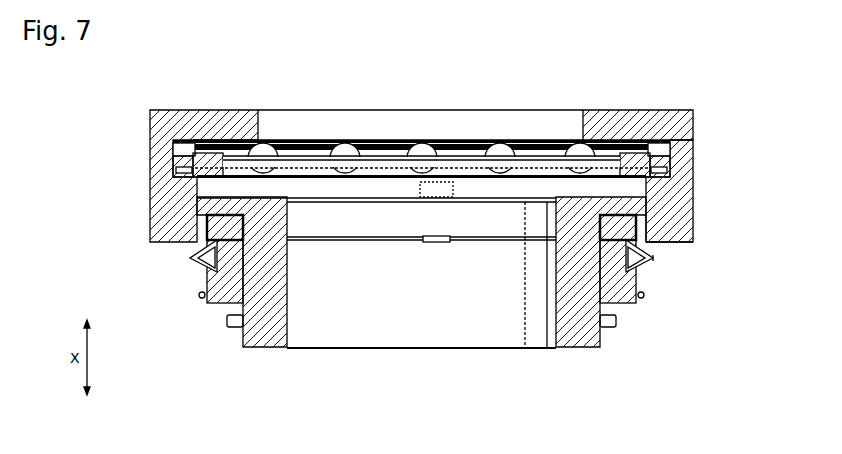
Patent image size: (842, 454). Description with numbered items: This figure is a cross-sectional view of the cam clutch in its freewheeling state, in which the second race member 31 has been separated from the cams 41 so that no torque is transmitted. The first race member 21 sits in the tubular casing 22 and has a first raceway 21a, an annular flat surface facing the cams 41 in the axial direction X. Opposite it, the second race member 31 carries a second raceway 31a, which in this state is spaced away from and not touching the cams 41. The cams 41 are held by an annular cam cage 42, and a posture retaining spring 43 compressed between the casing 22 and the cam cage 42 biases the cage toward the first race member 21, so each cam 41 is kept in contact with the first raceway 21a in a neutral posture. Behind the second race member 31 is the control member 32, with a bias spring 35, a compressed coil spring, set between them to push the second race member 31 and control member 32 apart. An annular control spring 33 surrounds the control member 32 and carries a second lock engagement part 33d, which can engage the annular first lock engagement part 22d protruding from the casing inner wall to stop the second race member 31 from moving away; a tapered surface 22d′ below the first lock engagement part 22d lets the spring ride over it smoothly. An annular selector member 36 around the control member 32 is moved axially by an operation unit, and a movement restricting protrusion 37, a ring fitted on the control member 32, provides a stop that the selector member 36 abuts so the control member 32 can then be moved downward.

The first race member 21 is at (193, 127).
The first raceway 21a is at (217, 140).
The casing 22 is at (690, 197).
The first lock engagement part 22d is at (693, 238).
The tapered surface 22d′ is at (653, 243).
The second race member 31 is at (235, 225).
The second raceway 31a is at (273, 198).
The control member 32 is at (596, 348).
The control spring 33 is at (652, 263).
The second lock engagement part 33d is at (655, 258).
The bias spring 35 is at (275, 348).
The selector member 36 is at (203, 298).
The movement restricting protrusion 37 is at (233, 327).
The cams 41 is at (418, 142).
The cam cage 42 is at (608, 138).
The posture retaining spring 43 is at (178, 170).